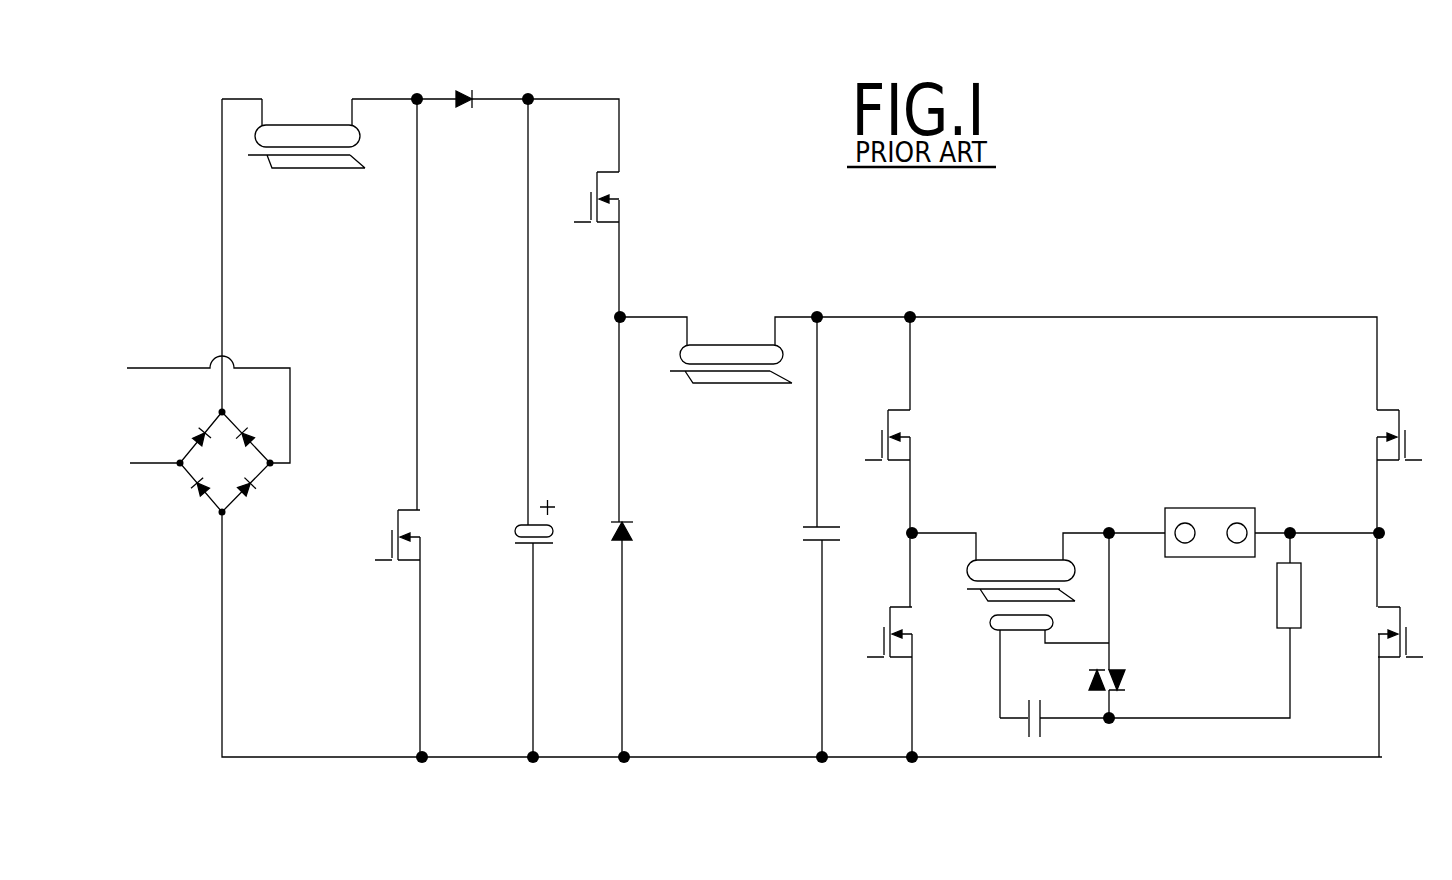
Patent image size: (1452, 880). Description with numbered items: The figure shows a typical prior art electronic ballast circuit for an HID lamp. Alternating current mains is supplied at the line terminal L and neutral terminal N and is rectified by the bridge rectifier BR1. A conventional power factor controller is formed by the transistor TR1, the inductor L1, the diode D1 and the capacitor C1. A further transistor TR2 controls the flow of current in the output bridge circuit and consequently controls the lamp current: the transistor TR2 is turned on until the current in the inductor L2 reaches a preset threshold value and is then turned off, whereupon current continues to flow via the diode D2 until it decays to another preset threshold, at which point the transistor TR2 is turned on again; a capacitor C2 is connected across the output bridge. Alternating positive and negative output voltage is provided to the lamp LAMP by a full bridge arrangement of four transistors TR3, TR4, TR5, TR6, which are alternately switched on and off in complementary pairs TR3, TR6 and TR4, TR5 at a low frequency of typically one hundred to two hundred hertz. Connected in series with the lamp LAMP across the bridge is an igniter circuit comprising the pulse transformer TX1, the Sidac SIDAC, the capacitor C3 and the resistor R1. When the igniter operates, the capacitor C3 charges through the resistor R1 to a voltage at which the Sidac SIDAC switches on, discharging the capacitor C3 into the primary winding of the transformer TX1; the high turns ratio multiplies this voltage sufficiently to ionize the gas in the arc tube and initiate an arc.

The line input terminal L is at (194, 409).
The neutral input terminal N is at (143, 464).
The bridge rectifier BR1 is at (225, 462).
The inductor L1 is at (306, 129).
The diode D1 is at (462, 115).
The transistor TR1 is at (397, 518).
The transistor TR2 is at (591, 181).
The capacitor C1 is at (541, 541).
The diode D2 is at (642, 539).
The inductor L2 is at (731, 349).
The capacitor C2 is at (830, 548).
The transistor TR3 is at (884, 421).
The transistor TR4 is at (887, 617).
The pulse transformer TX1 is at (1021, 580).
The capacitor C3 is at (1052, 714).
The Sidac SIDAC is at (1147, 682).
The lamp LAMP is at (1210, 548).
The resistor R1 is at (1289, 595).
The transistor TR5 is at (1402, 420).
The transistor TR6 is at (1402, 616).